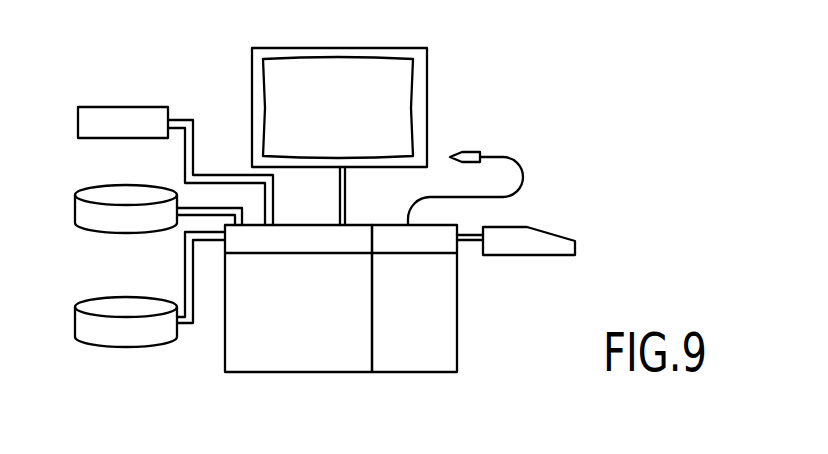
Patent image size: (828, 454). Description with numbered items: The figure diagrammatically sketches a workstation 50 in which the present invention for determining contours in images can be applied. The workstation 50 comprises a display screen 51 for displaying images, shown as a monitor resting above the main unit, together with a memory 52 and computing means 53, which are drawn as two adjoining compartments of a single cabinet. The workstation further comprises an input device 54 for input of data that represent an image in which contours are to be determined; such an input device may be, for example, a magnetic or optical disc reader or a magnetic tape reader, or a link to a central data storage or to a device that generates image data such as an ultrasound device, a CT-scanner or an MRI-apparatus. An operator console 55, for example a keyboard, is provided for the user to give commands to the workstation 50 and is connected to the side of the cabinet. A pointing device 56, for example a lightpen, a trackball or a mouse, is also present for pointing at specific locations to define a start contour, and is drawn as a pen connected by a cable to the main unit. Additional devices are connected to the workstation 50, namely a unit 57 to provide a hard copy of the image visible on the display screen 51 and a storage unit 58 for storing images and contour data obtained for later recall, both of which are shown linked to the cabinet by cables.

The workstation 50 is at (578, 100).
The display screen 51 is at (392, 98).
The memory 52 is at (288, 353).
The computing means 53 is at (443, 300).
The input device 54 is at (115, 235).
The operator console 55 is at (547, 248).
The pointing device 56 is at (465, 150).
The unit to provide a hard copy 57 is at (122, 107).
The storage unit 58 is at (115, 348).